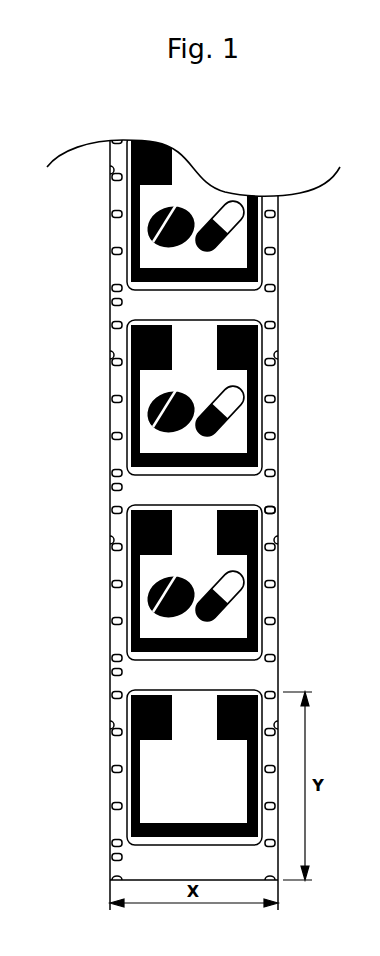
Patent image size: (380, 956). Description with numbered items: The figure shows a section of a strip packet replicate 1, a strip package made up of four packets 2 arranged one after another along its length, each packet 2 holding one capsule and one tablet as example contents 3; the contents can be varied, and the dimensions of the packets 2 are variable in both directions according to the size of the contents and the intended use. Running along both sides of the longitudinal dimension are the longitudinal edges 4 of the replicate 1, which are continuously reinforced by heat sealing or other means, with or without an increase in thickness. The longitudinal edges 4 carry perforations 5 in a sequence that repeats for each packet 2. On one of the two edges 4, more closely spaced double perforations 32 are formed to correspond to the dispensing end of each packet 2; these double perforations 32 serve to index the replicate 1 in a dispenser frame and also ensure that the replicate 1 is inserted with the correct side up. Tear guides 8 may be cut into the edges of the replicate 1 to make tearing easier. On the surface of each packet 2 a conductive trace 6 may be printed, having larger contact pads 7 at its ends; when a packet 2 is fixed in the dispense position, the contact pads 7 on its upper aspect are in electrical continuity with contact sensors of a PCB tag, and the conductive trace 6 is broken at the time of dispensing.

The strip packet replicate 1 is at (83, 170).
The packet 2 is at (277, 222).
The contents 3 is at (266, 398).
The longitudinal edge 4 is at (270, 423).
The perforations 5 is at (303, 492).
The conductive trace 6 is at (236, 397).
The contact pads 7 is at (279, 532).
The tear guides 8 is at (273, 539).
The double perforations 32 is at (100, 509).